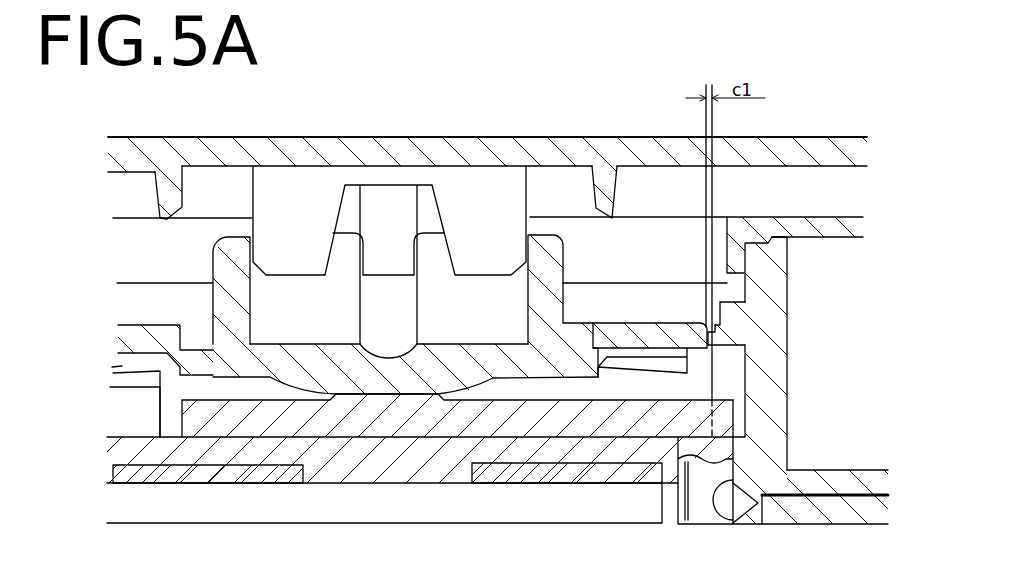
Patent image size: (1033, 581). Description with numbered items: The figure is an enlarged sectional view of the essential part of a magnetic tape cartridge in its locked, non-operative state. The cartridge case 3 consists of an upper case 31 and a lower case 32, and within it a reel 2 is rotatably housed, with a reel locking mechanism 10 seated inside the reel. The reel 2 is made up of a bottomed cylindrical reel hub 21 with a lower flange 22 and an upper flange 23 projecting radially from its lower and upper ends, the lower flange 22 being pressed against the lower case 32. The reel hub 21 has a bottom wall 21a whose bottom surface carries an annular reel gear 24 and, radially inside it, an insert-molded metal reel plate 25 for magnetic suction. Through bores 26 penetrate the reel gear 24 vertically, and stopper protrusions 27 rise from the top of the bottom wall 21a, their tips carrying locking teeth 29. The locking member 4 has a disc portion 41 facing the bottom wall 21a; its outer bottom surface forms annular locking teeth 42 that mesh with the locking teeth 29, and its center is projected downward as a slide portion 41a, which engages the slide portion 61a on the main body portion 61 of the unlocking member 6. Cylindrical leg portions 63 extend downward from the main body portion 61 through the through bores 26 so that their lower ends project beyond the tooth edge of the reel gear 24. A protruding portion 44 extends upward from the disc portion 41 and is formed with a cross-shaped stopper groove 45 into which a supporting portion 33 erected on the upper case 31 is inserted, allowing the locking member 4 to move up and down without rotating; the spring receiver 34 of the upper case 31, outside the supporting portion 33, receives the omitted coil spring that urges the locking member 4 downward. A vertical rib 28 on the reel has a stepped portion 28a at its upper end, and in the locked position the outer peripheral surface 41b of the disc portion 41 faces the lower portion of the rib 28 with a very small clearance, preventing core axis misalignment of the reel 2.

The reel 2 is at (806, 206).
The cartridge case 3 is at (803, 121).
The locking member 4 is at (499, 392).
The unlocking member 6 is at (267, 385).
The reel locking mechanism 10 is at (594, 273).
The reel hub 21 is at (777, 400).
The bottom wall 21a is at (425, 462).
The lower flange 22 is at (840, 480).
The upper flange 23 is at (835, 232).
The reel gear 24 is at (665, 516).
The reel plate 25 is at (220, 480).
The through bore 26 is at (735, 512).
The stopper protrusion 27 is at (133, 423).
The vertical rib 28 is at (737, 333).
The stepped portion 28a is at (720, 315).
The locking teeth 29 is at (135, 387).
The upper case 31 is at (233, 150).
The lower case 32 is at (800, 513).
The supporting portion 33 is at (387, 207).
The spring receiver 34 is at (172, 198).
The disc portion 41 is at (330, 357).
The slide portion 41a is at (375, 395).
The outer peripheral surface 41b is at (690, 352).
The locking teeth 42 is at (127, 347).
The protruding portion 44 is at (225, 267).
The stopper groove 45 is at (459, 311).
The main body portion 61 is at (580, 428).
The slide portion 61a is at (453, 350).
The leg portion 63 is at (697, 517).